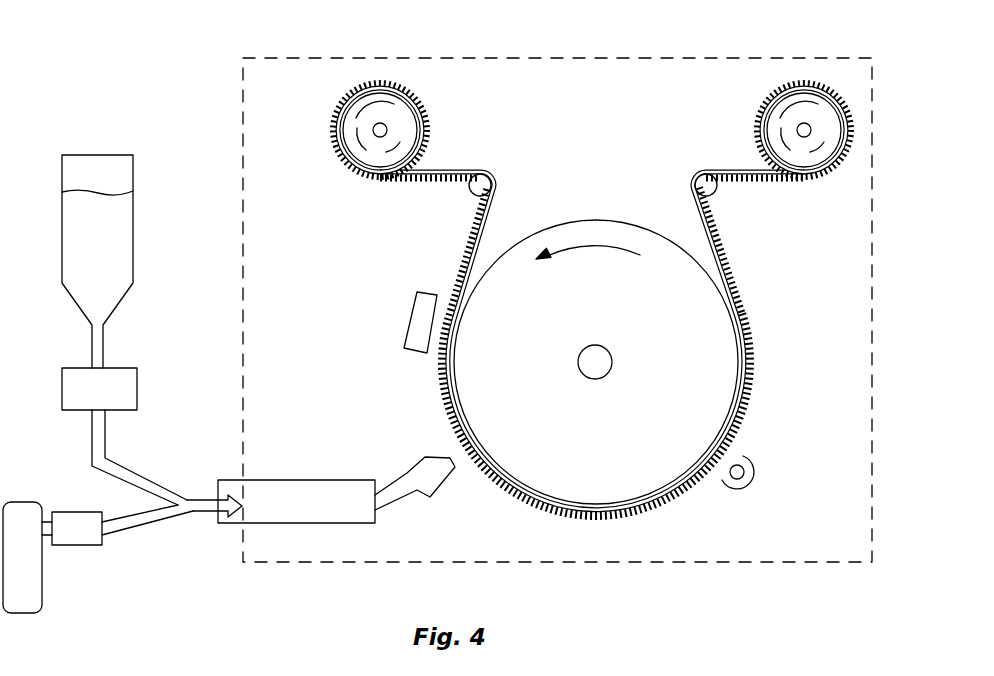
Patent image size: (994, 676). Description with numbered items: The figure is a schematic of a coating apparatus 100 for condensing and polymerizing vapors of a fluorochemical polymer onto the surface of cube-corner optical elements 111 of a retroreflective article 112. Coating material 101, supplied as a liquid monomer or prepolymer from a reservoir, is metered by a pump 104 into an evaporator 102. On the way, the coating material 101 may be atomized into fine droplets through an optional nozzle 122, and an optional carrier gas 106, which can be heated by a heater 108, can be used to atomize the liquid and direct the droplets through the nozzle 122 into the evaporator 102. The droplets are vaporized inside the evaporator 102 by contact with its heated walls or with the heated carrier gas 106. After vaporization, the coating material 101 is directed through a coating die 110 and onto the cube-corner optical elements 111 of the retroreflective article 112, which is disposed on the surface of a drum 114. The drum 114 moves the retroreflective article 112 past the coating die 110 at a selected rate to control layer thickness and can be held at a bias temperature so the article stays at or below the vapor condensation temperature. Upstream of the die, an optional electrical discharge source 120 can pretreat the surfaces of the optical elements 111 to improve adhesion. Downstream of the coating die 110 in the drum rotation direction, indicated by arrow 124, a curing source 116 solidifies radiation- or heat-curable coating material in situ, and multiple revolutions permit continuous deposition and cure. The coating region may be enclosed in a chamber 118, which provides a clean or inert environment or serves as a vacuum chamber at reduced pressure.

The coating apparatus 100 is at (183, 56).
The coating material 101 is at (125, 217).
The evaporator 102 is at (305, 485).
The pump 104 is at (130, 387).
The carrier gas 106 is at (23, 607).
The heater 108 is at (70, 514).
The coating die 110 is at (412, 462).
The cube-corner optical elements 111 is at (503, 482).
The retroreflective article 112 is at (503, 187).
The drum 114 is at (727, 349).
The curing source 116 is at (748, 486).
The chamber 118 is at (388, 57).
The electrical discharge source 120 is at (415, 314).
The nozzle 122 is at (233, 525).
The arrow 124 is at (596, 242).